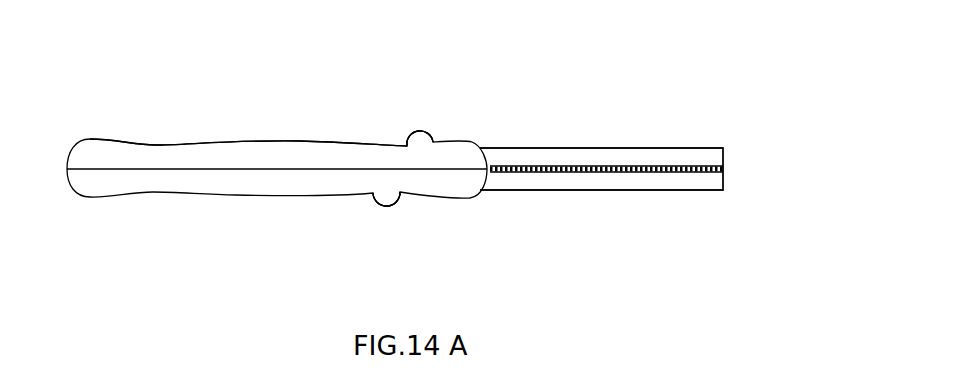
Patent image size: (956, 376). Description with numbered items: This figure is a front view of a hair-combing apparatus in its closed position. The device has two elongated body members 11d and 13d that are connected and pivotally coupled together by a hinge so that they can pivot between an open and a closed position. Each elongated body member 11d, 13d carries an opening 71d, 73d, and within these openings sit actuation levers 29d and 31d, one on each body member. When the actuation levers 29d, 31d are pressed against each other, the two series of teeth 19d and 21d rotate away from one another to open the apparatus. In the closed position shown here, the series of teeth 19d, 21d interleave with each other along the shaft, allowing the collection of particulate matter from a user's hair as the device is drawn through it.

The elongated body member 11d is at (236, 192).
The elongated body member 13d is at (226, 143).
The opening 73d is at (407, 145).
The actuation lever 29d is at (420, 136).
The opening 71d is at (374, 196).
The actuation lever 31d is at (387, 200).
The series of teeth 19d is at (698, 167).
The series of teeth 21d is at (601, 169).